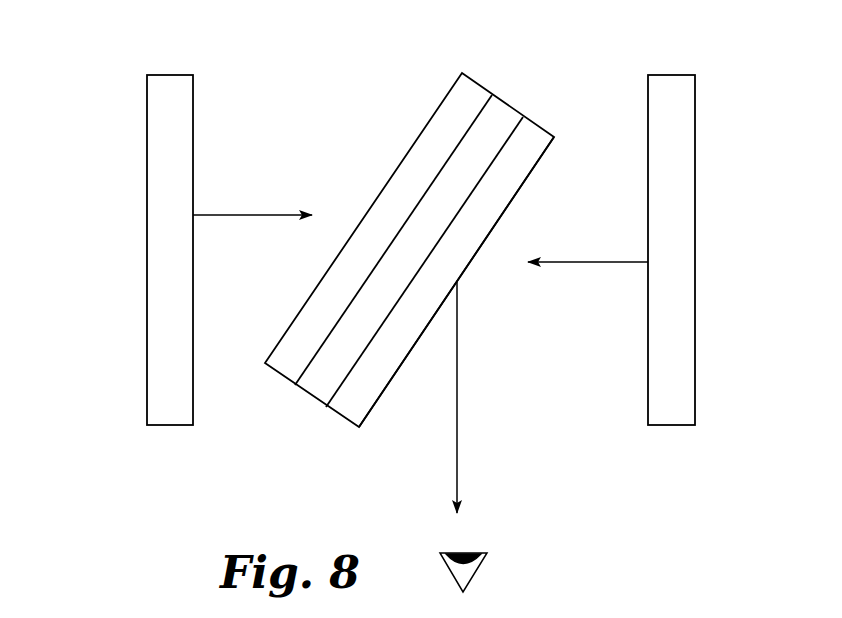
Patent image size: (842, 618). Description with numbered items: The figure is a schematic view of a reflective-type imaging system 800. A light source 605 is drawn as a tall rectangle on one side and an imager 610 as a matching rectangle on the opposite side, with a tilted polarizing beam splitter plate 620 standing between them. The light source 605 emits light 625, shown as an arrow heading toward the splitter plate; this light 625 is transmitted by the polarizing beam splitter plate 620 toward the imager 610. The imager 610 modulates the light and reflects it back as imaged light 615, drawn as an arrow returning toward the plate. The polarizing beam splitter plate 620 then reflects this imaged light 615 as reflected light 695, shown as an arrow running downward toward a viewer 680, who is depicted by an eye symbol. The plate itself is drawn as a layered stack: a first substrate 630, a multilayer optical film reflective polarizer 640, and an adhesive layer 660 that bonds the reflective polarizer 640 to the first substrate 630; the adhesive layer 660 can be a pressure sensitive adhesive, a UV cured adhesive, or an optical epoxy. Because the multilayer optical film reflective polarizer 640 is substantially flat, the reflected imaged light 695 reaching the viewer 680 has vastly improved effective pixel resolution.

The reflective-type imaging system 800 is at (117, 48).
The light source 605 is at (159, 162).
The imager 610 is at (680, 132).
The polarizing beam splitter plate 620 is at (414, 246).
The first substrate 630 is at (478, 82).
The adhesive layer 660 is at (508, 102).
The multilayer optical film reflective polarizer 640 is at (545, 127).
The light 625 is at (238, 215).
The imaged light 615 is at (590, 262).
The reflected light 695 is at (457, 432).
The viewer 680 is at (472, 573).